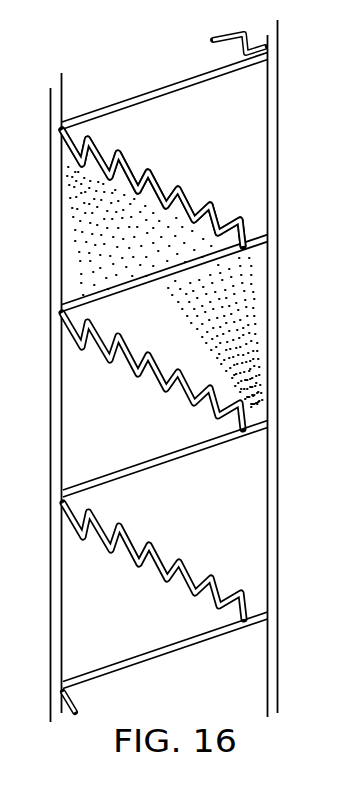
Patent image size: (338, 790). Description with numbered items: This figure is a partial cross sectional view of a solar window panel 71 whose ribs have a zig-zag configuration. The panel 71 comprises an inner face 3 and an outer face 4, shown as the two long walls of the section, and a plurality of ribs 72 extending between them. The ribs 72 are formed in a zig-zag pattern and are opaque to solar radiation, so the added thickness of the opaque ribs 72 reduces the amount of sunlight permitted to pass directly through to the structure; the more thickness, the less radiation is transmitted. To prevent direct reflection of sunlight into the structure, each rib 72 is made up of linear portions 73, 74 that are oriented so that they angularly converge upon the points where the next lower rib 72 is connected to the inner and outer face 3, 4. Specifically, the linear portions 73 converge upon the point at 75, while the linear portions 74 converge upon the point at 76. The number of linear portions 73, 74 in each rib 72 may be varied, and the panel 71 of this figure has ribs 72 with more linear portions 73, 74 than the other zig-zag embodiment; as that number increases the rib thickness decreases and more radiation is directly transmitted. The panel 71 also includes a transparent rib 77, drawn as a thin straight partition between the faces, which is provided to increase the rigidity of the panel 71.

The inner face 3 is at (279, 563).
The outer face 4 is at (50, 194).
The panel 71 is at (122, 58).
The rib 72 is at (182, 556).
The linear portion 73 is at (95, 148).
The linear portion 74 is at (163, 191).
The point 75 is at (270, 425).
The point 76 is at (50, 308).
The transparent rib 77 is at (166, 463).